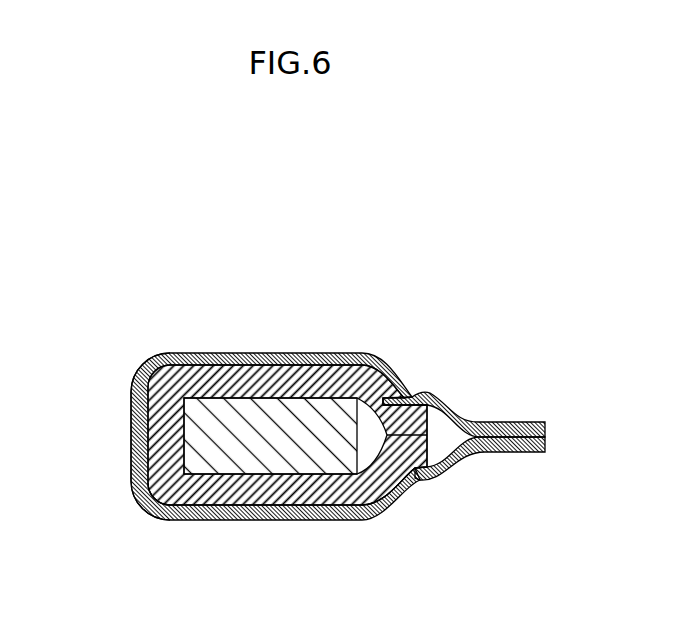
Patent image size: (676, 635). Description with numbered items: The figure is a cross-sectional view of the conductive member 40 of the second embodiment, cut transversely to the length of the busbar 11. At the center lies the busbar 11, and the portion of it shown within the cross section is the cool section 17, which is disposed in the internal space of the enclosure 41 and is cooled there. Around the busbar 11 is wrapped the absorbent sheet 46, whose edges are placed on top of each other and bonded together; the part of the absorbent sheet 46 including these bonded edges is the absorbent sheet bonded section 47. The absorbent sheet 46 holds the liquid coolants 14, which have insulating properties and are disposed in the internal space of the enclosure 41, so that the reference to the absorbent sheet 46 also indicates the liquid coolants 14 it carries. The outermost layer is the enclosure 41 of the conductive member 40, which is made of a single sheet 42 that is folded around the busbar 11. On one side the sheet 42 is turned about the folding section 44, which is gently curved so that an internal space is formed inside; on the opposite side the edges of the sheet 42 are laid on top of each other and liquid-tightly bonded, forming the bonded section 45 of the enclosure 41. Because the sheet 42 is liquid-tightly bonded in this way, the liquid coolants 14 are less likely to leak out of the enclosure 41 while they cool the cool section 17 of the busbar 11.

The conductive member 40 is at (372, 327).
The enclosure 41 is at (197, 355).
The sheet 42 is at (264, 356).
The folding section 44 is at (131, 420).
The bonded section 45 is at (525, 420).
The absorbent sheet 46 is at (161, 489).
The absorbent sheet bonded section 47 is at (413, 402).
The busbar 11 is at (249, 508).
The cool section 17 is at (228, 453).
The liquid coolants 14 is at (358, 493).